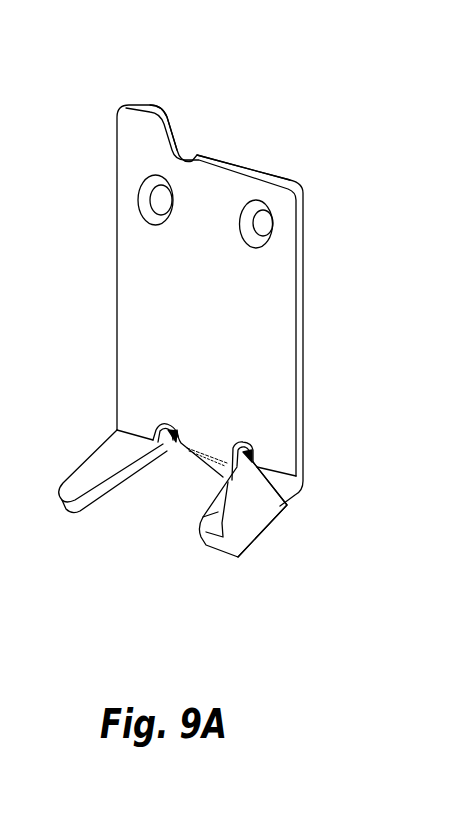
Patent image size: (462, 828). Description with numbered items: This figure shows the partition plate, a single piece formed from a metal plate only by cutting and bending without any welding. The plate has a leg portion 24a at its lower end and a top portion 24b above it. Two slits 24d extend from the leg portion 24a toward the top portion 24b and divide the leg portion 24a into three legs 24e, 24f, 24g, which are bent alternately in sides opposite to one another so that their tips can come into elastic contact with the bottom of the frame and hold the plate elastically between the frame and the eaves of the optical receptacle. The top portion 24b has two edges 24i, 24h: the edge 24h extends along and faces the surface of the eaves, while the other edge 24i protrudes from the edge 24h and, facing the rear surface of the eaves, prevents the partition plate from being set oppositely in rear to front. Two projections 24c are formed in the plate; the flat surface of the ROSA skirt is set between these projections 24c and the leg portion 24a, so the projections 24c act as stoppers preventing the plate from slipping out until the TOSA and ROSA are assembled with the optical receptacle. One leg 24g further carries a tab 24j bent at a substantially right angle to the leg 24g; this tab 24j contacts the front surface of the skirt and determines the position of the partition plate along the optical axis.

The leg portion 24a is at (225, 536).
The top portion 24b is at (213, 258).
The projection 24c is at (162, 200).
The slit 24d is at (178, 428).
The leg 24e is at (83, 507).
The leg 24f is at (209, 467).
The leg 24g is at (218, 543).
The edge 24h is at (250, 167).
The edge 24i is at (143, 135).
The tab 24j is at (298, 521).